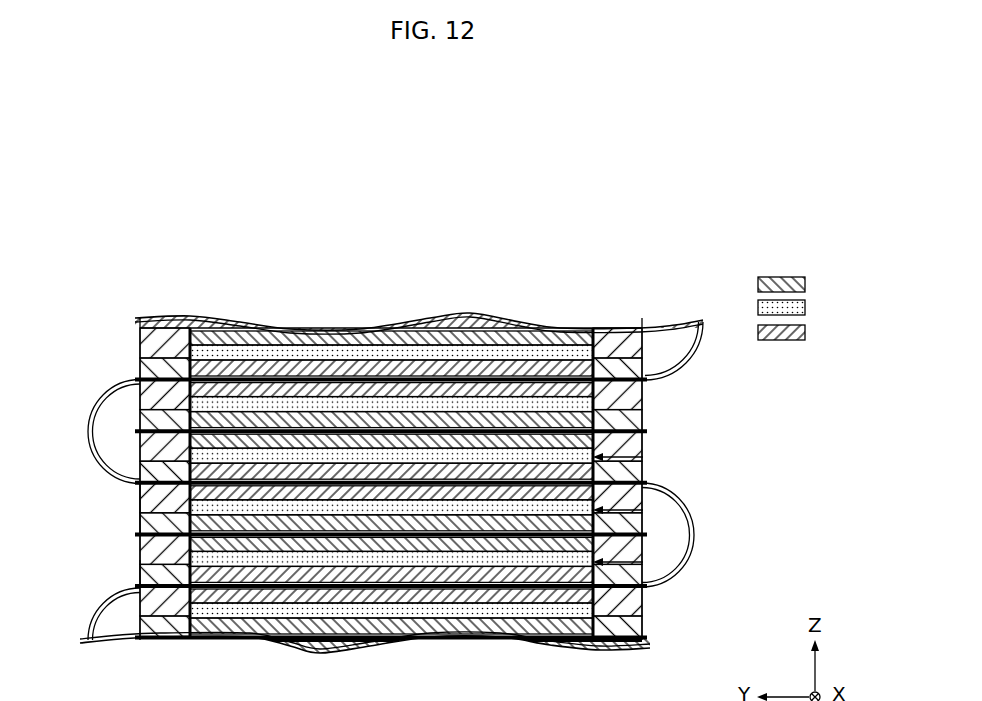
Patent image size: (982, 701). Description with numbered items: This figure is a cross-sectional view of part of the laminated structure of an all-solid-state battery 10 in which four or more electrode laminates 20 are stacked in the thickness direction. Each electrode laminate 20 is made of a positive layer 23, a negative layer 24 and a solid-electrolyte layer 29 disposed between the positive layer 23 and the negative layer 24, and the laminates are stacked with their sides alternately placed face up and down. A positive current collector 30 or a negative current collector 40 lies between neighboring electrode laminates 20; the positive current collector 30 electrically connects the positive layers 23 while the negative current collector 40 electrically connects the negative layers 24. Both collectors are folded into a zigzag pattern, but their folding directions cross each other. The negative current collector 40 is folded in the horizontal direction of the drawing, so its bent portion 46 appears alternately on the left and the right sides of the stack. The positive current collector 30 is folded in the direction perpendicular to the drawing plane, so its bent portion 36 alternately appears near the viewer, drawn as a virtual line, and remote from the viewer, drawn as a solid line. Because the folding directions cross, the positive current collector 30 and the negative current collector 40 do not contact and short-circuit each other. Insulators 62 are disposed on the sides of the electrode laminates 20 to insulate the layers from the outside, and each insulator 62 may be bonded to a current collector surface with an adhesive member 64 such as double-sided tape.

The all-solid-state battery 10 is at (157, 266).
The electrode laminate 20 is at (603, 457).
The positive layer 23 is at (801, 285).
The solid-electrolyte layer 29 is at (801, 308).
The negative layer 24 is at (801, 333).
The positive current collector 30 is at (643, 536).
The bent portion 36 is at (145, 350).
The negative current collector 40 is at (136, 582).
The bent portion 46 is at (97, 402).
The insulator 62 is at (140, 492).
The adhesive member 64 is at (140, 522).